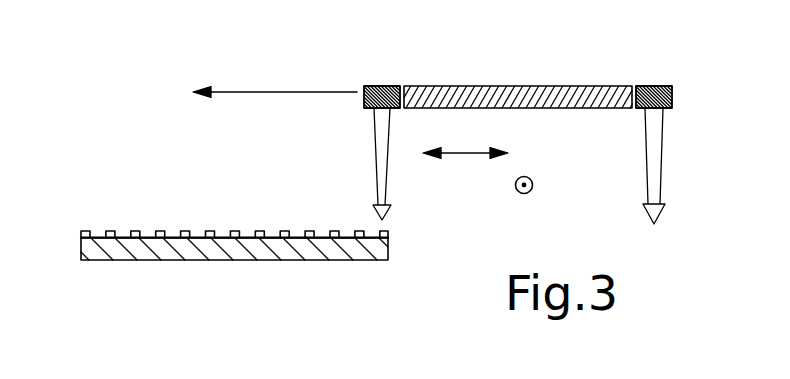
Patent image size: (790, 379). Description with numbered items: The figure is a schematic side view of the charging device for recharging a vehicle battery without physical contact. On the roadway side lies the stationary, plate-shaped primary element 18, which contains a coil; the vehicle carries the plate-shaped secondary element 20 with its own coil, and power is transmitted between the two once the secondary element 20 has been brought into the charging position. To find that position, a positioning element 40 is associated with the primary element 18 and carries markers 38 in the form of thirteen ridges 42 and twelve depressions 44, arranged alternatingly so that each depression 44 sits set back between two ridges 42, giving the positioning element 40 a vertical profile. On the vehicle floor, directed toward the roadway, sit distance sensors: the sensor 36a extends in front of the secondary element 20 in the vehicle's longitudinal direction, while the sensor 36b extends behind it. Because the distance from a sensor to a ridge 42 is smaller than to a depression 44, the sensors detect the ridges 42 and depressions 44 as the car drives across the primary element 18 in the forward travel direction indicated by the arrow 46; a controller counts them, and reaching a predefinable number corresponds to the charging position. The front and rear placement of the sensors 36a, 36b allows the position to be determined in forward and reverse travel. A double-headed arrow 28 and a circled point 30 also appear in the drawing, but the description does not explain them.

The primary element 18 is at (178, 253).
The secondary element 20 is at (497, 86).
The lateral movement direction 28 is at (463, 153).
The axis / rotation point 30 is at (533, 182).
The sensor 36a is at (379, 86).
The sensor 36b is at (653, 86).
The markers 38 is at (244, 237).
The positioning element 40 is at (308, 230).
The ridges 42 is at (80, 232).
The depressions 44 is at (98, 235).
The arrow 46 is at (303, 92).